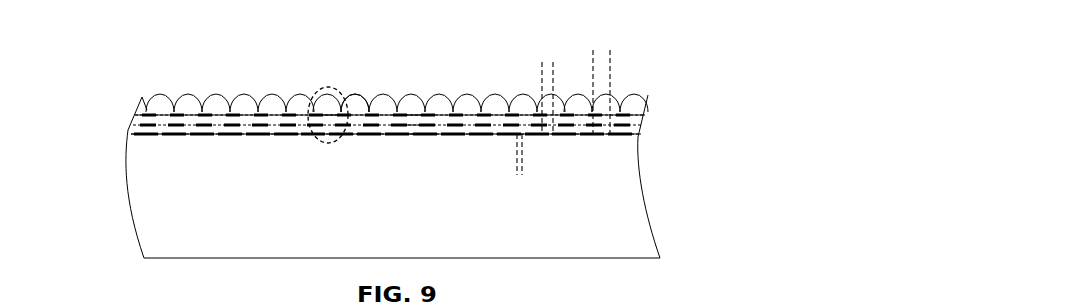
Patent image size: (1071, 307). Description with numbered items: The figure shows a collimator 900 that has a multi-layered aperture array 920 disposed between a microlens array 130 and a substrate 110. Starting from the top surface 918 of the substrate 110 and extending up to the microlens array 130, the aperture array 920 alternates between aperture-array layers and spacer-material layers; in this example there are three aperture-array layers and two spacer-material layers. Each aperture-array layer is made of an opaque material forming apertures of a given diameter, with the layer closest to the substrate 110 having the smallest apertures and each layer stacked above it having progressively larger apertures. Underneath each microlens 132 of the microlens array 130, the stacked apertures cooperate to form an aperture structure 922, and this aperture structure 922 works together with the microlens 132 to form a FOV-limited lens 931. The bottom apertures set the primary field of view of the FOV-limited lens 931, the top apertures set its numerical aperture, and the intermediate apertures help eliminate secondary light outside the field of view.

The collimator 900 is at (112, 58).
The substrate 110 is at (641, 180).
The microlens array 130 is at (670, 97).
The microlens 132 is at (330, 103).
The multi-layered aperture array 920 is at (666, 120).
The aperture structure 922 is at (341, 103).
The top surface 918 is at (418, 120).
The FOV-limited lens 931 is at (317, 90).